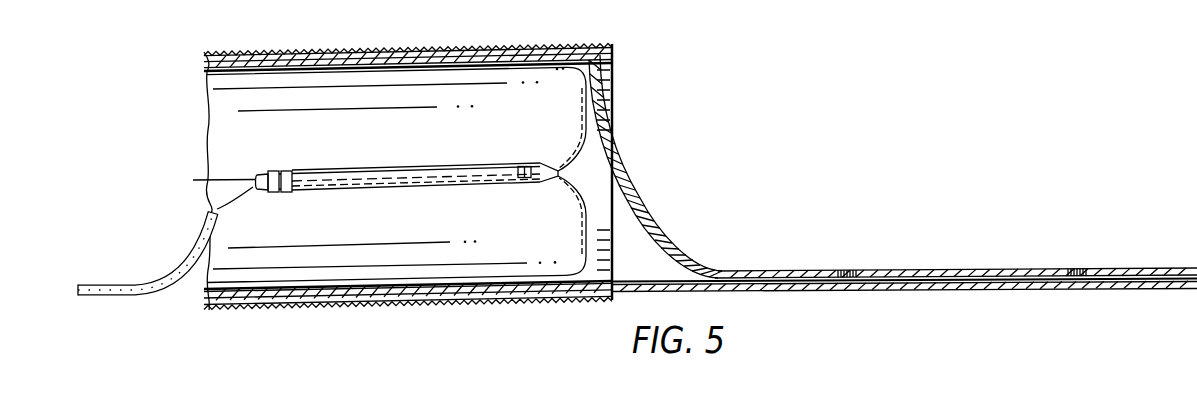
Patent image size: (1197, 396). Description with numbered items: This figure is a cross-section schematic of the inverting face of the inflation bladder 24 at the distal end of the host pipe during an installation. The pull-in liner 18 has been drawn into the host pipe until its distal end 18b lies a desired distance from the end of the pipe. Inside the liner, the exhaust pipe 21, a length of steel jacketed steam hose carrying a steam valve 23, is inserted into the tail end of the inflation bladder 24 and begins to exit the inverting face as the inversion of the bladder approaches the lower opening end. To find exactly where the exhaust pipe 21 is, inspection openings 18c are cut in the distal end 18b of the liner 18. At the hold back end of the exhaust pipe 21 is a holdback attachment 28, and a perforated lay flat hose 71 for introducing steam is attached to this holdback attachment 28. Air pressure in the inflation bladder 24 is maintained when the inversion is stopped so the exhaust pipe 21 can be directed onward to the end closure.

The pull-in liner 18 is at (432, 58).
The distal end of liner 18b is at (1075, 292).
The inspection openings 18c is at (852, 270).
The exhaust pipe 21 is at (402, 167).
The steam valve 23 is at (522, 183).
The inflation bladder 24 is at (577, 142).
The holdback attachment 28 is at (262, 170).
The perforated lay flat hose 71 is at (115, 297).